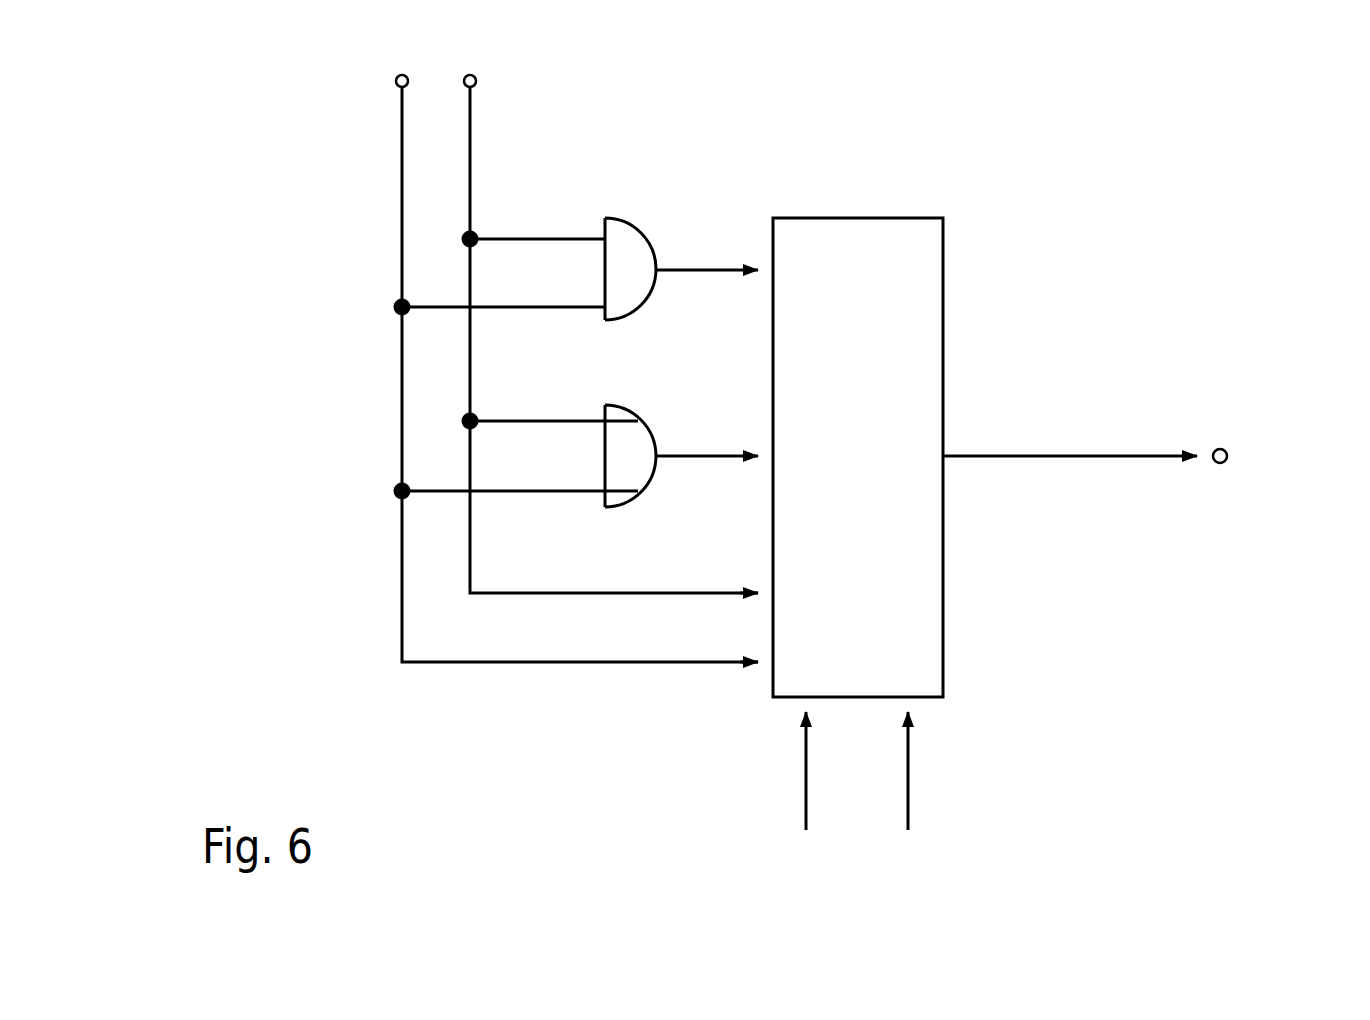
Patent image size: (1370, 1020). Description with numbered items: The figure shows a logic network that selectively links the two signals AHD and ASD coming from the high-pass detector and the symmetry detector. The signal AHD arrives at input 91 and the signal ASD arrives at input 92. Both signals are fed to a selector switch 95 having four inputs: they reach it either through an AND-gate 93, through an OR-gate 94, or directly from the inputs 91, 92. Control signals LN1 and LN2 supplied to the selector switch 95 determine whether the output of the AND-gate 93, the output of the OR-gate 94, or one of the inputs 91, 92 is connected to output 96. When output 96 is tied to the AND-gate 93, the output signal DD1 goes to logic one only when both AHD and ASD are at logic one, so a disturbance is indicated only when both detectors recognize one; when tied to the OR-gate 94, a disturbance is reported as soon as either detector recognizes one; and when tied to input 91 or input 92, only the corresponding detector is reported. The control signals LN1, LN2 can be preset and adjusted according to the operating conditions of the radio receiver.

The input 91 is at (561, 348).
The input 92 is at (608, 314).
The AND-gate 93 is at (681, 260).
The OR-gate 94 is at (681, 449).
The selector switch 95 is at (858, 527).
The output 96 is at (1125, 474).